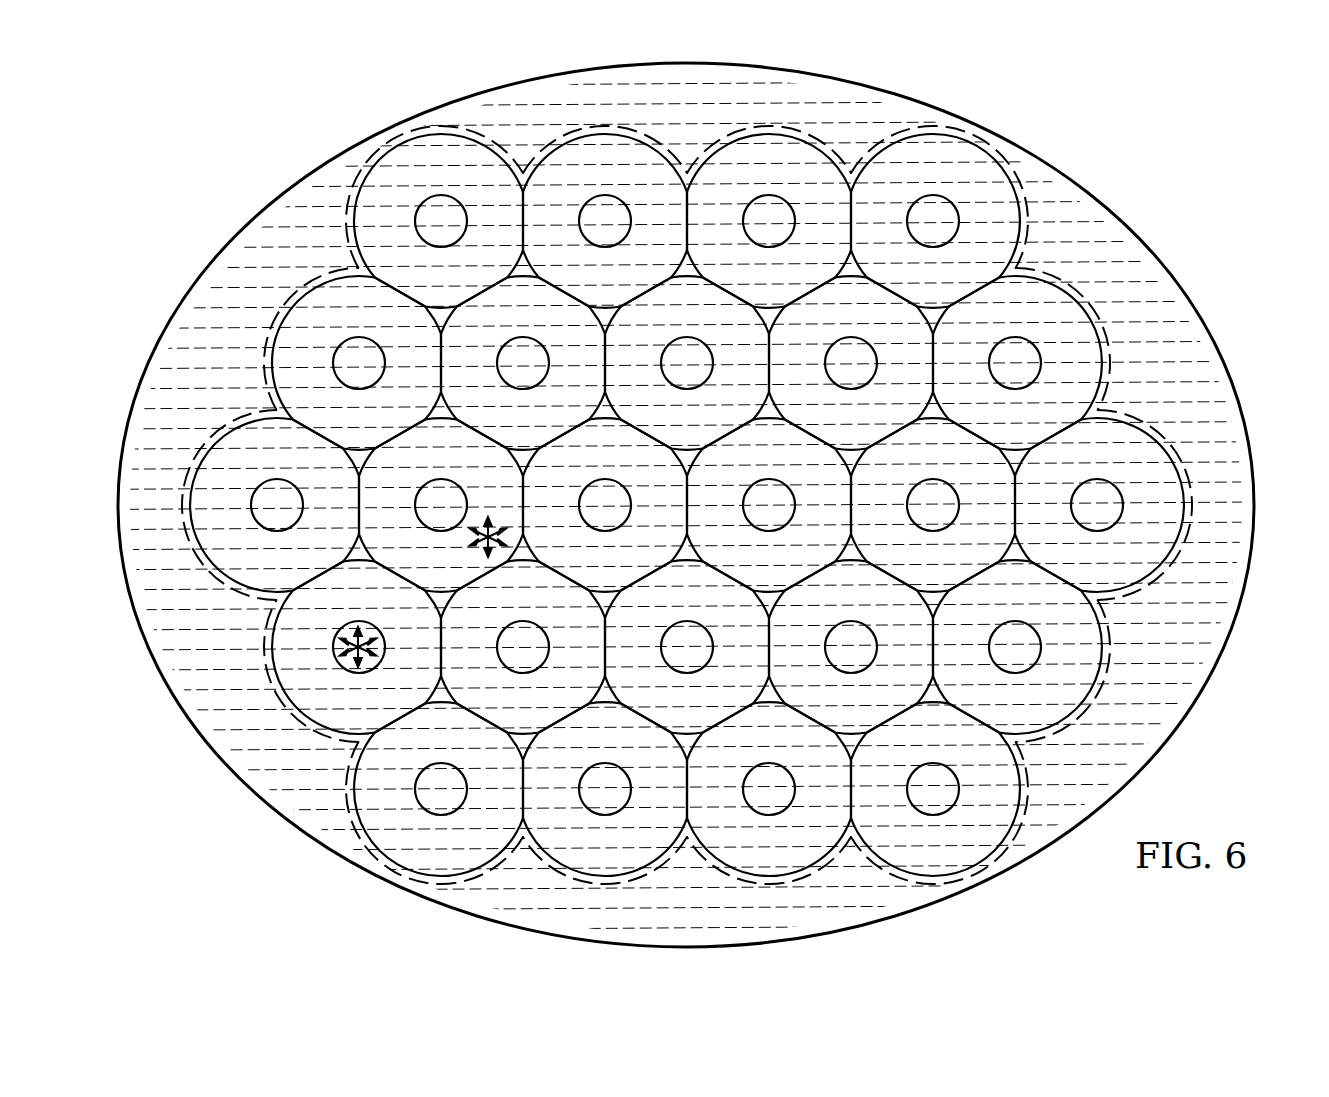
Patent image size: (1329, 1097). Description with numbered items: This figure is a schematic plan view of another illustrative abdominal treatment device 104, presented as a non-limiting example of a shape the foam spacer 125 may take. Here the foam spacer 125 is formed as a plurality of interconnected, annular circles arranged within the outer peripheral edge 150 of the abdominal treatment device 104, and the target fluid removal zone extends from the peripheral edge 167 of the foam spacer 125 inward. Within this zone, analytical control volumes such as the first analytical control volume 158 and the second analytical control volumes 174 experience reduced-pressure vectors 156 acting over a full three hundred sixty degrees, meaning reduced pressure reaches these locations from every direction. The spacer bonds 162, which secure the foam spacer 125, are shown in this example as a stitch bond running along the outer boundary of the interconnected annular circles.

The abdominal treatment device 104 is at (1128, 214).
The foam spacer 125 is at (767, 165).
The peripheral edge 150 is at (1254, 474).
The reduced-pressure vectors 156 is at (488, 528).
The first analytical control volume 158 is at (332, 650).
The spacer bonds 162 is at (922, 126).
The peripheral edge of the foam spacer 167 is at (306, 296).
The second analytical control volumes 174 is at (480, 537).